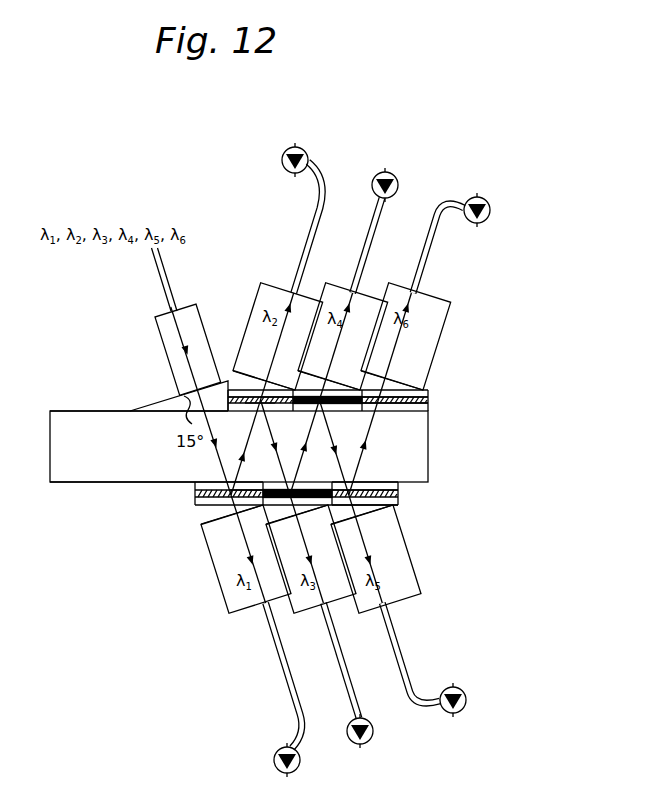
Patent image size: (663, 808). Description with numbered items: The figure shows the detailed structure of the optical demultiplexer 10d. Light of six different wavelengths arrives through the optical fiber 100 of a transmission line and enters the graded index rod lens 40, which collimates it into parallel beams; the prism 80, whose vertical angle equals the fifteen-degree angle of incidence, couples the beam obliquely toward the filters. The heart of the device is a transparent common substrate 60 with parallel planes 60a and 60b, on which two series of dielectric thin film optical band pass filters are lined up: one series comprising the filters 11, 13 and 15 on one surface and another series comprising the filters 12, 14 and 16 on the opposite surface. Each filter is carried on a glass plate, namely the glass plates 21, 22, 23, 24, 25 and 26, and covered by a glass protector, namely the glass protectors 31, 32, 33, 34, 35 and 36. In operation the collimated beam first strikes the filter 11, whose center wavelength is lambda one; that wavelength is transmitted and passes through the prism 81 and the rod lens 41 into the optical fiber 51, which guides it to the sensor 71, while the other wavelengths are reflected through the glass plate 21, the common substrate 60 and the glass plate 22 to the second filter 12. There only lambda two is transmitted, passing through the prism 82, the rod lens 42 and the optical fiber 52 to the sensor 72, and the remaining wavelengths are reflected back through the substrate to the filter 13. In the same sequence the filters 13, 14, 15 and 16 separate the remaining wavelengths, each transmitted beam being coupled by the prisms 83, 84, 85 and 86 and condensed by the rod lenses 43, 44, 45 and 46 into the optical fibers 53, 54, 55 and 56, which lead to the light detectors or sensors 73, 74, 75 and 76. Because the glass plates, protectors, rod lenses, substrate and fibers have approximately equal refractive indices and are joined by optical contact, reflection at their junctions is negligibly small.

The optical demultiplexer 10d is at (216, 774).
The optical fiber in a transmission line 100 is at (158, 272).
The graded index rod lens 40 is at (160, 336).
The prism 80 is at (158, 402).
The transparent common substrate 60 is at (50, 440).
The parallel plane of common substrate 60a is at (70, 411).
The parallel plane of common substrate 60b is at (70, 482).
The glass protector 36 is at (429, 392).
The dielectric thin film optical band pass filter 16 is at (429, 400).
The glass plate 26 is at (429, 407).
The dielectric thin film optical band pass filter 14 is at (330, 405).
The glass protector 34 is at (325, 405).
The glass protector 32 is at (236, 405).
The glass plate 22 is at (278, 404).
The dielectric thin film optical band pass filter 12 is at (252, 404).
The glass plate 24 is at (368, 410).
The glass plate 21 is at (195, 488).
The dielectric thin film optical band pass filter 11 is at (195, 495).
The glass protector 31 is at (195, 506).
The dielectric thin film optical band pass filter 13 is at (295, 488).
The glass plate 23 is at (273, 486).
The glass protector 33 is at (324, 490).
The glass plate 25 is at (362, 488).
The dielectric thin film optical band pass filter 15 is at (398, 485).
The glass protector 35 is at (398, 504).
The graded index rod lens 41 is at (228, 614).
The graded index rod lens 42 is at (266, 285).
The graded index rod lens 43 is at (302, 616).
The graded index rod lens 44 is at (332, 287).
The graded index rod lens 45 is at (368, 616).
The graded index rod lens 46 is at (401, 287).
The prism 81 is at (217, 514).
The prism 82 is at (280, 387).
The prism 83 is at (284, 516).
The prism 84 is at (343, 387).
The prism 85 is at (350, 516).
The prism 86 is at (411, 388).
The optical fiber 51 is at (290, 697).
The optical fiber 52 is at (311, 222).
The optical fiber 53 is at (349, 697).
The optical fiber 54 is at (363, 247).
The optical fiber 55 is at (404, 688).
The optical fiber 56 is at (424, 248).
The light detector or sensor 71 is at (300, 761).
The light detector or sensor 72 is at (304, 150).
The light detector or sensor 73 is at (372, 737).
The light detector or sensor 74 is at (396, 176).
The light detector or sensor 75 is at (463, 710).
The light detector or sensor 76 is at (488, 203).